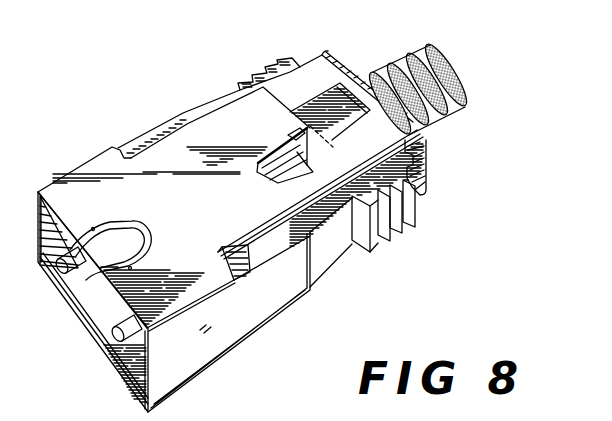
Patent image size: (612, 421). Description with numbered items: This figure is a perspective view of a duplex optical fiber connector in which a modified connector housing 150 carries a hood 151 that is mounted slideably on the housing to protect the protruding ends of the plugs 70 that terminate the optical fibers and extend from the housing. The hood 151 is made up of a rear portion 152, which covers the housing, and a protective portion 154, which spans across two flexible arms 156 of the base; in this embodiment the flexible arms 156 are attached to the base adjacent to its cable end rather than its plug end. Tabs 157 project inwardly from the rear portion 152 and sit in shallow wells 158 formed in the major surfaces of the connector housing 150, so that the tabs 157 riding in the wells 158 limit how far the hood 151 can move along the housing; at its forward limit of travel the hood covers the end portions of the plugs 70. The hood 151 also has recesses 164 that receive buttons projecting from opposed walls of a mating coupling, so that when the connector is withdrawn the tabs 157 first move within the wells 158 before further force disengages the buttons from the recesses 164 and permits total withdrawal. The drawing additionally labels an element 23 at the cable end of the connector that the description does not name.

The cable 23 is at (445, 50).
The plugs 70 is at (120, 322).
The connector housing 150 is at (320, 55).
The hood 151 is at (70, 172).
The rear portion 152 is at (227, 104).
The protective portion 154 is at (265, 320).
The flexible arms 156 is at (336, 243).
The tabs 157 is at (302, 131).
The shallow wells 158 is at (343, 88).
The recesses 164 is at (148, 221).